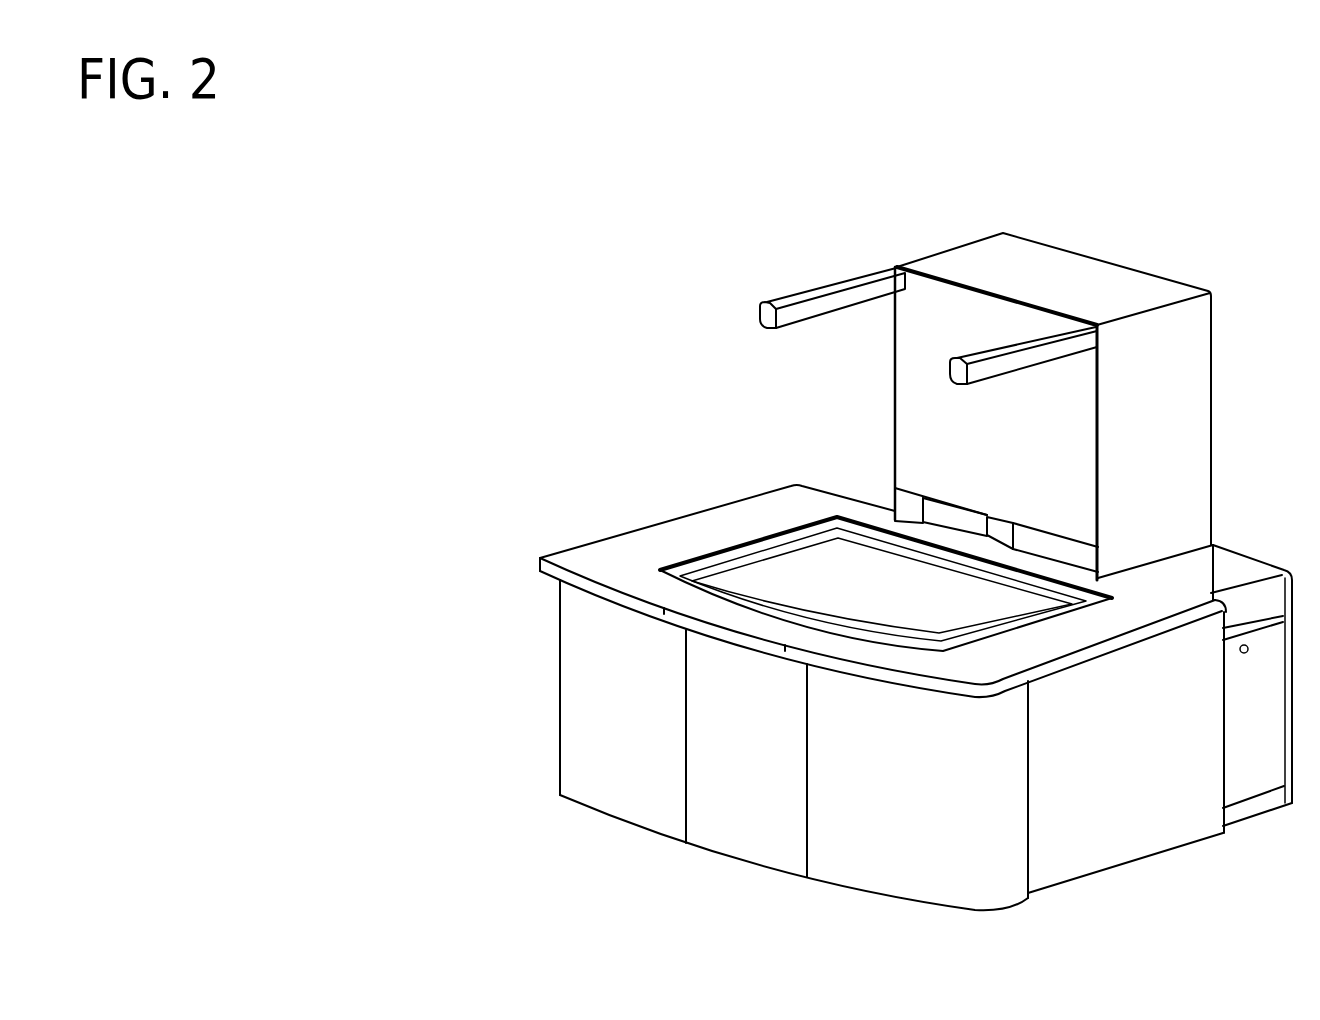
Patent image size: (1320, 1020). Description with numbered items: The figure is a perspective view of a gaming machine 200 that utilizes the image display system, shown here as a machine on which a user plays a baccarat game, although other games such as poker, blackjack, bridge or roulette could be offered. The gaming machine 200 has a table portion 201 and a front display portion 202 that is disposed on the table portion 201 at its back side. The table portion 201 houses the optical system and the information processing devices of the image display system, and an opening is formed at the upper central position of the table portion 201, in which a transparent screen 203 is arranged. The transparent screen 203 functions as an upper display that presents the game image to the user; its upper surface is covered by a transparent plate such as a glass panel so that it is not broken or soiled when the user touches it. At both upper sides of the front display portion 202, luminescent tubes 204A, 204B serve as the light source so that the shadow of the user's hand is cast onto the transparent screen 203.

The gaming machine 200 is at (1172, 237).
The table portion 201 is at (583, 705).
The front display portion 202 is at (1198, 418).
The transparent screen 203 is at (782, 562).
The luminescent tube 204A is at (825, 287).
The luminescent tube 204B is at (1018, 340).